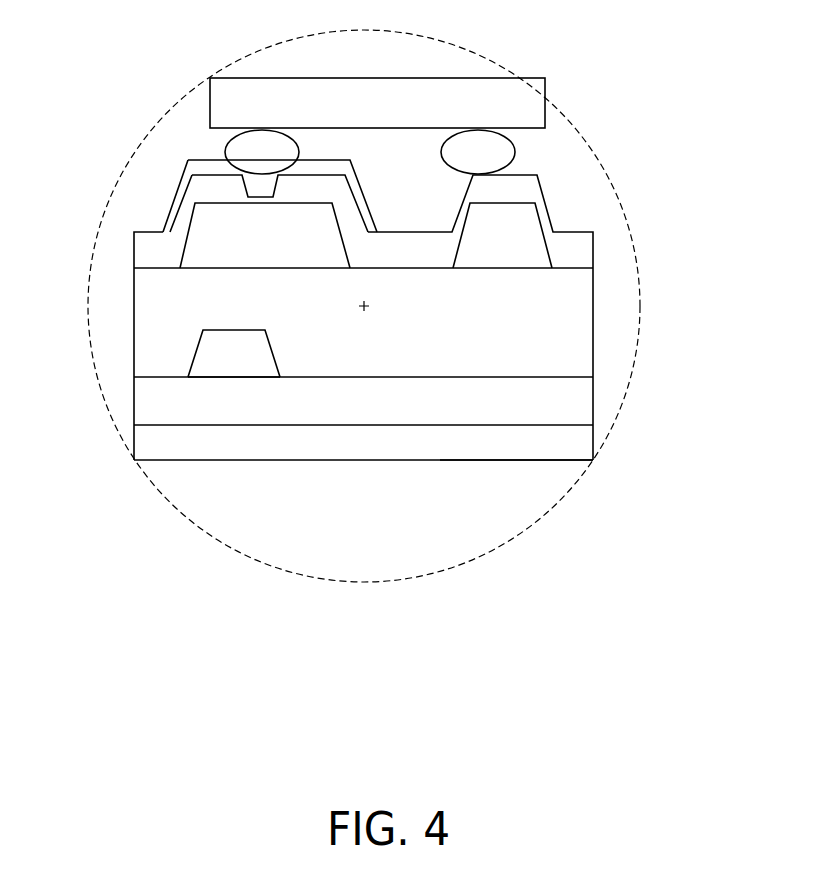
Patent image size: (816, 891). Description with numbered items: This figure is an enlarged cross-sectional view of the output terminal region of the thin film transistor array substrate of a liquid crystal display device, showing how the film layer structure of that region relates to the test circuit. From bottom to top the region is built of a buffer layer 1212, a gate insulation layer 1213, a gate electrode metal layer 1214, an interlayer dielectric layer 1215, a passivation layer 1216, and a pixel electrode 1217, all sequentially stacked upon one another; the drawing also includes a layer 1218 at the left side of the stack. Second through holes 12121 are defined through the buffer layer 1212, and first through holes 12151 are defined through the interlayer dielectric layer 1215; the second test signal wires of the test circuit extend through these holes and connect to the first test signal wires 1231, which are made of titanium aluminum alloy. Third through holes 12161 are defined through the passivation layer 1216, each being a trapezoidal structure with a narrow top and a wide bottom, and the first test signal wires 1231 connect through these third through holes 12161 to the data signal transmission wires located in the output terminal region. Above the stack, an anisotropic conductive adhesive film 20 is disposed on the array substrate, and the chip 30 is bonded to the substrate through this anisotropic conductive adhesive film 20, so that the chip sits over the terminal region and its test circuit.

The chip 30 is at (527, 102).
The anisotropic conductive adhesive film 20 is at (497, 150).
The pixel electrode 1217 is at (204, 168).
The support layer 1218 is at (212, 240).
The passivation layer 1216 is at (578, 243).
The third through holes 12161 is at (543, 257).
The first test signal wires 1231 is at (543, 214).
The interlayer dielectric layer 1215 is at (570, 338).
The gate electrode metal layer 1214 is at (270, 365).
The first through holes 12151 is at (220, 362).
The gate insulation layer 1213 is at (573, 403).
The buffer layer 1212 is at (575, 442).
The second through holes 12121 is at (538, 445).